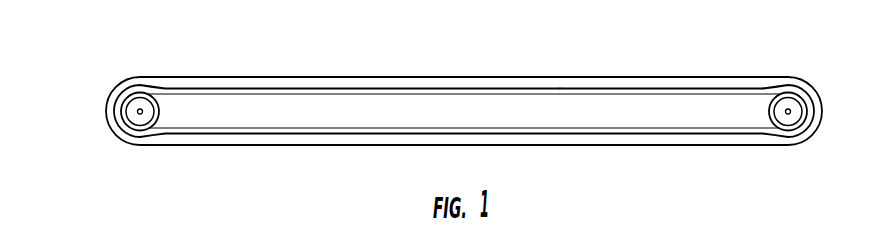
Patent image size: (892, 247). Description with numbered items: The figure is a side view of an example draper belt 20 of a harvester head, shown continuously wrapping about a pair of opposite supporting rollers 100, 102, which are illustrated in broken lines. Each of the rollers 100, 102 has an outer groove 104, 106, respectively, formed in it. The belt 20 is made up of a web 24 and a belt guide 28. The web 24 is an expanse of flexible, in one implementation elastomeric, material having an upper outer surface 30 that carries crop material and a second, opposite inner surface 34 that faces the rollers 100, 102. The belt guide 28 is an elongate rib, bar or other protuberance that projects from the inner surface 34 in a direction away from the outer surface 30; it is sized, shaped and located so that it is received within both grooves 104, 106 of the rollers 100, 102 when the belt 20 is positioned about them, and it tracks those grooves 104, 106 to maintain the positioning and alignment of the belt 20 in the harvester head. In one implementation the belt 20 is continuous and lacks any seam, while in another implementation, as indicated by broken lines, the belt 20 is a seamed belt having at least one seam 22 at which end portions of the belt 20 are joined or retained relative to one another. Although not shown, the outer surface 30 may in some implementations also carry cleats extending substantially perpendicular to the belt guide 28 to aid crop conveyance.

The draper belt 20 is at (86, 89).
The seam 22 is at (465, 87).
The web 24 is at (340, 76).
The belt guide 28 is at (292, 95).
The upper outer surface 30 is at (537, 77).
The inner surface 34 is at (607, 89).
The roller 100 is at (163, 112).
The roller 102 is at (768, 111).
The groove 104 is at (162, 116).
The groove 106 is at (772, 124).